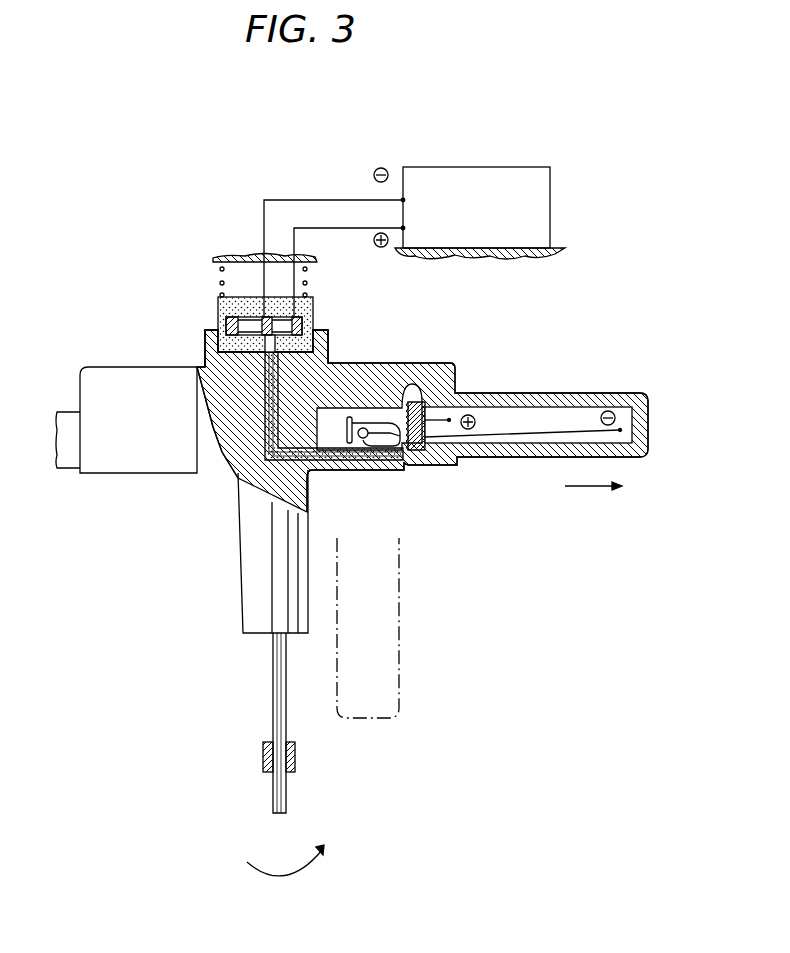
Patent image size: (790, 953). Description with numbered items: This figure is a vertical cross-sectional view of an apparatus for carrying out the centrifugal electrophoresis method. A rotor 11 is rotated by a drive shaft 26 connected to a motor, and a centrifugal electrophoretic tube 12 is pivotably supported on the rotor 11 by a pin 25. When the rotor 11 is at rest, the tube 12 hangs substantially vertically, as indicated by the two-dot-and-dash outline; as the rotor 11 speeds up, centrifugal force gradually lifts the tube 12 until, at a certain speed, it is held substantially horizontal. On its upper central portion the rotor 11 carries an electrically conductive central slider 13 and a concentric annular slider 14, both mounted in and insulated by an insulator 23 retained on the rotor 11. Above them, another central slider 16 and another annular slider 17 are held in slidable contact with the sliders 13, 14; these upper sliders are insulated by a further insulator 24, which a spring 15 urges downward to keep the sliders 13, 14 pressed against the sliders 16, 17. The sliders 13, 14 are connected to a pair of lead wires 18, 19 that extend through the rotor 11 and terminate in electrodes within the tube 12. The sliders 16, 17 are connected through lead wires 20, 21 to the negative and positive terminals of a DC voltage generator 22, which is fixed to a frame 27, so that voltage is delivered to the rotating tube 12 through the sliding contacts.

The rotor 11 is at (140, 363).
The centrifugal electrophoretic tube 12 is at (500, 462).
The central electrically conductive slider 13 is at (260, 328).
The annular electrically conductive slider 14 is at (207, 330).
The spring 15 is at (218, 282).
The central electrically conductive slider 16 is at (272, 320).
The annular electrically conductive slider 17 is at (313, 325).
The lead wire 18 is at (343, 462).
The lead wire 19 is at (360, 447).
The lead wire 20 is at (264, 218).
The lead wire 21 is at (350, 228).
The DC voltage generator 22 is at (502, 238).
The insulator 23 is at (330, 348).
The insulator 24 is at (308, 312).
The pin 25 is at (373, 440).
The drive shaft 26 is at (286, 695).
The frame 27 is at (553, 252).